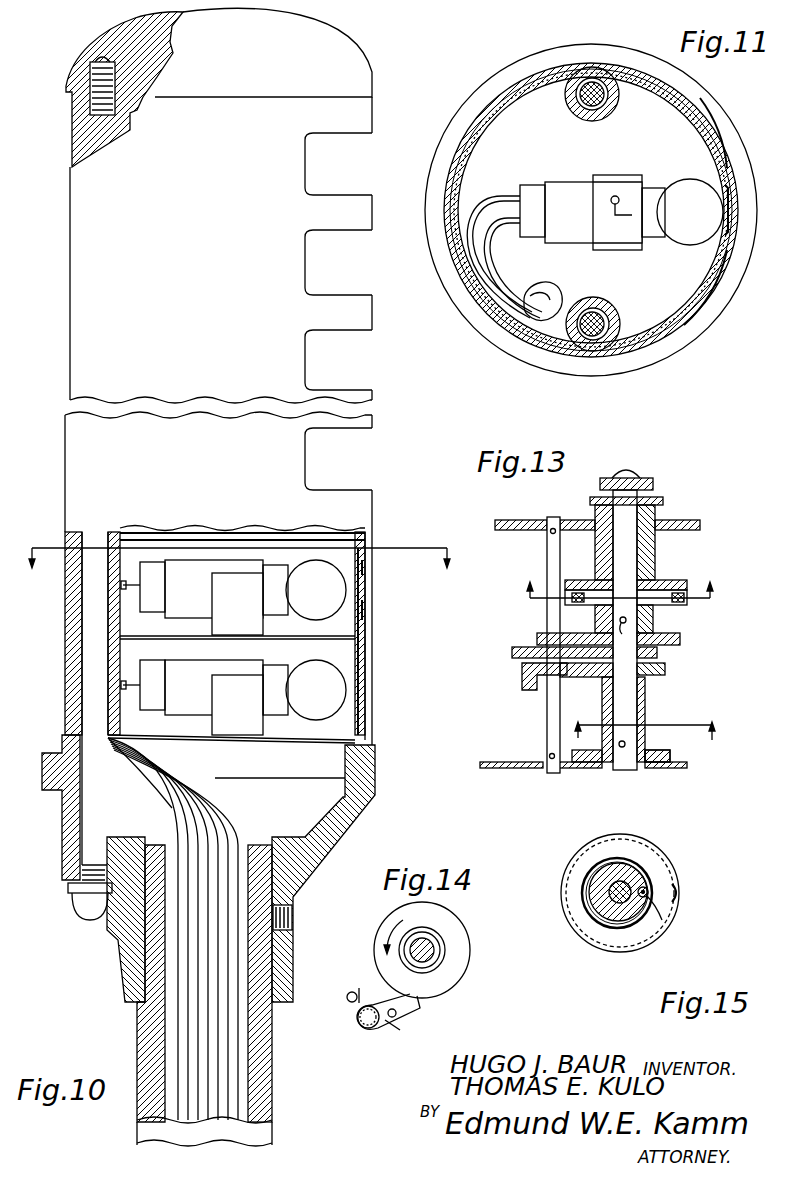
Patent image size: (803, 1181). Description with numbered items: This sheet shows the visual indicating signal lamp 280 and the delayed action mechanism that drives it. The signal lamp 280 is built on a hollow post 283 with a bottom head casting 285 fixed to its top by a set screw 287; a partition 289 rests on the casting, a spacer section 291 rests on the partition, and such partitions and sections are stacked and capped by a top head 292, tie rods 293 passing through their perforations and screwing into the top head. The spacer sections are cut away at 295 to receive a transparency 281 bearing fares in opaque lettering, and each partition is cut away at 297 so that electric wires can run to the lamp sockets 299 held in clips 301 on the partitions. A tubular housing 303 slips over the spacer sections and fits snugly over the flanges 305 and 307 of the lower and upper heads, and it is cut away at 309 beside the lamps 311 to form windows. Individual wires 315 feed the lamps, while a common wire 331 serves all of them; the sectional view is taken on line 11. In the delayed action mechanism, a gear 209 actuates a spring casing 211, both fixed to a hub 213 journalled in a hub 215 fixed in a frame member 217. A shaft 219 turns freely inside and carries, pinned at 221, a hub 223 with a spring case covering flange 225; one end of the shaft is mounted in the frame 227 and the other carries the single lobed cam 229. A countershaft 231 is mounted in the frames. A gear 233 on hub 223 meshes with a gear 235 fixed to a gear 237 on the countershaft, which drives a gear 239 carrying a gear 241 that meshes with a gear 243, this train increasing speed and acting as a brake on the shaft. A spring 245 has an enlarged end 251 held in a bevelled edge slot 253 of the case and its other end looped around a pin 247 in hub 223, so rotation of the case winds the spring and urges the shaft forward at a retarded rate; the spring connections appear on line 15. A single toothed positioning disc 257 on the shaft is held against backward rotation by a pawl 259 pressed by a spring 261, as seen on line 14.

In FIG. 10, the section line 11— 11 is at (239, 569).
In FIG. 13, the section line 14— 14 is at (645, 742).
In FIG. 13, the section line 15— 15 is at (621, 580).
In FIG. 13, the gear 209 is at (590, 498).
In FIG. 13, the spring casing 211 is at (680, 580).
In FIG. 15, the spring casing 211 is at (563, 873).
In FIG. 13, the hub 213 is at (654, 554).
In FIG. 13, the hub 215 is at (596, 542).
In FIG. 13, the frame member 217 is at (670, 522).
In FIG. 13, the shaft 219 is at (635, 710).
In FIG. 14, the shaft 219 is at (445, 948).
In FIG. 15, the shaft 219 is at (602, 920).
In FIG. 13, the pin 221 is at (623, 632).
In FIG. 13, the hub 223 is at (654, 624).
In FIG. 13, the spring case covering flange 225 is at (595, 615).
In FIG. 13, the frame 227 is at (676, 768).
In FIG. 13, the single lobed cam 229 is at (648, 478).
In FIG. 13, the countershaft 231 is at (547, 720).
In FIG. 13, the gear 233 is at (682, 640).
In FIG. 13, the gear 235 is at (537, 634).
In FIG. 13, the gear 237 is at (512, 650).
In FIG. 13, the gear 239 is at (660, 653).
In FIG. 13, the gear 241 is at (667, 671).
In FIG. 13, the gear 243 is at (522, 668).
In FIG. 13, the spring 245 is at (590, 567).
In FIG. 15, the spring 245 is at (644, 853).
In FIG. 15, the pin 247 is at (668, 923).
In FIG. 15, the spring end 251 is at (680, 893).
In FIG. 15, the bevelled edge slot 253 is at (677, 905).
In FIG. 13, the single toothed positioning disc 257 is at (646, 752).
In FIG. 14, the single toothed positioning disc 257 is at (451, 929).
In FIG. 14, the pawl 259 is at (416, 1010).
In FIG. 14, the spring 261 is at (359, 988).
In FIG. 10, the signal lamp 280 is at (375, 413).
In FIG. 11, the signal lamp 280 is at (462, 399).
In FIG. 10, the transparency 281 is at (350, 160).
In FIG. 11, the transparency 281 is at (712, 303).
In FIG. 10, the hollow post 283 is at (275, 1062).
In FIG. 10, the bottom head casting 285 is at (300, 864).
In FIG. 10, the set screw 287 is at (293, 912).
In FIG. 10, the partition 289 is at (283, 637).
In FIG. 11, the partition 289 is at (622, 138).
In FIG. 10, the spacer section 291 is at (65, 606).
In FIG. 11, the spacer section 291 is at (496, 125).
In FIG. 10, the top head 292 is at (88, 46).
In FIG. 10, the tie rods 293 is at (85, 851).
In FIG. 11, the tie rods 293 is at (591, 118).
In FIG. 11, the cutaway 295 is at (680, 112).
In FIG. 11, the cutaway 297 is at (550, 288).
In FIG. 10, the lamp sockets 299 is at (192, 637).
In FIG. 11, the lamp sockets 299 is at (567, 236).
In FIG. 10, the clips 301 is at (237, 654).
In FIG. 11, the clips 301 is at (625, 246).
In FIG. 10, the tubular housing 303 is at (586, 384).
In FIG. 11, the tubular housing 303 is at (591, 210).
In FIG. 10, the flange 305 is at (62, 745).
In FIG. 10, the flange 307 is at (78, 98).
In FIG. 10, the windows 309 is at (352, 294).
In FIG. 10, the lamps 311 is at (304, 640).
In FIG. 11, the lamps 311 is at (682, 212).
In FIG. 10, the wires 315 is at (195, 832).
In FIG. 11, the wires 315 is at (482, 193).
In FIG. 10, the wire 331 is at (172, 809).